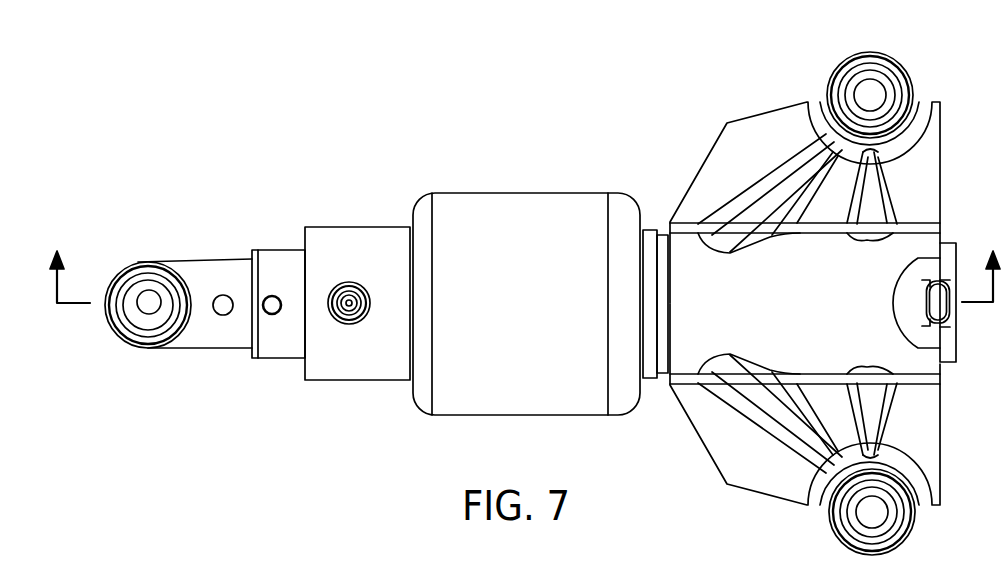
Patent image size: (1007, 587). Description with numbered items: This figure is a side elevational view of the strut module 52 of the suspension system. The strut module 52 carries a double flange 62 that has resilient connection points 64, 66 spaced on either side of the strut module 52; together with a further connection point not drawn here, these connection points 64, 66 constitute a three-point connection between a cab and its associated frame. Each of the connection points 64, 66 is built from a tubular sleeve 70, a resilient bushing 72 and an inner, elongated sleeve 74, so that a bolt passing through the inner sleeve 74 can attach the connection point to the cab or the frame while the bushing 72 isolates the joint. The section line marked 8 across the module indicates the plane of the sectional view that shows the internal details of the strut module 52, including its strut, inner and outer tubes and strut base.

The section line of FIG. 8 is at (524, 259).
The strut module 52 is at (530, 182).
The double flange 62 is at (935, 157).
The resilient connection point 64 is at (917, 83).
The resilient connection point 66 is at (917, 523).
The tubular sleeve 70 is at (133, 347).
The resilient bushing 72 is at (167, 278).
The inner, elongated sleeve 74 is at (140, 303).